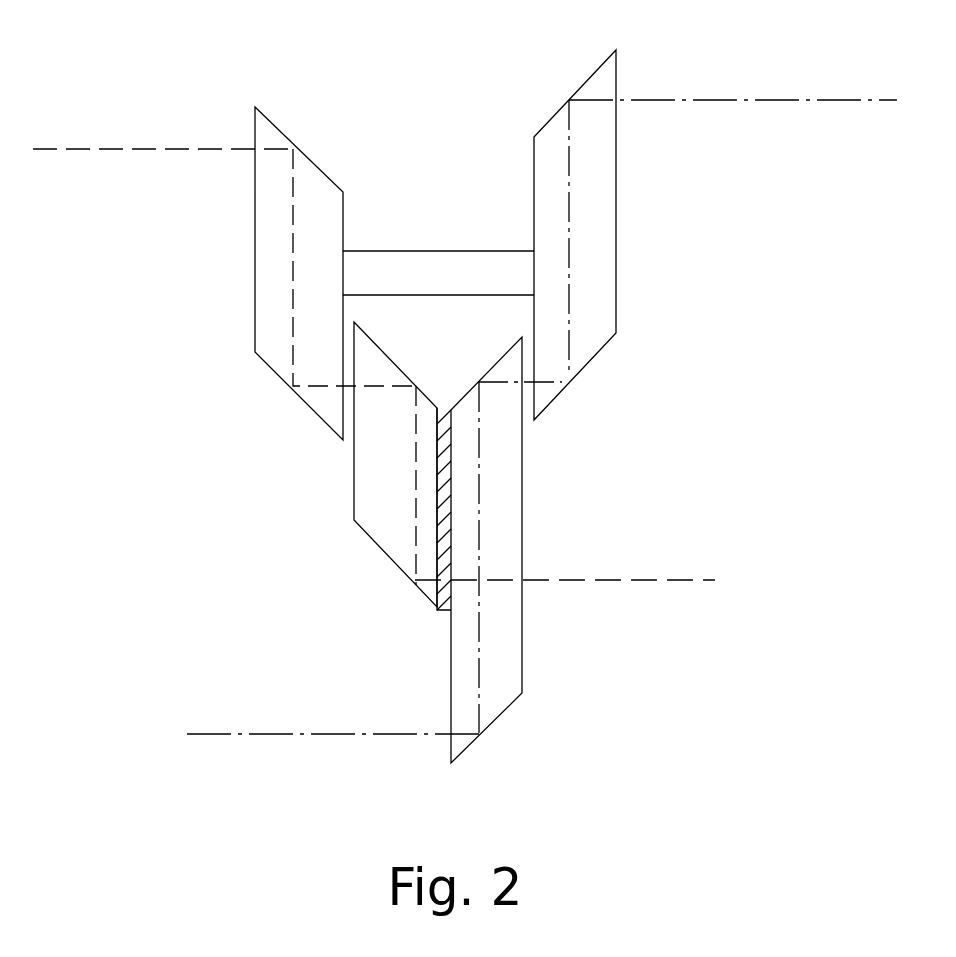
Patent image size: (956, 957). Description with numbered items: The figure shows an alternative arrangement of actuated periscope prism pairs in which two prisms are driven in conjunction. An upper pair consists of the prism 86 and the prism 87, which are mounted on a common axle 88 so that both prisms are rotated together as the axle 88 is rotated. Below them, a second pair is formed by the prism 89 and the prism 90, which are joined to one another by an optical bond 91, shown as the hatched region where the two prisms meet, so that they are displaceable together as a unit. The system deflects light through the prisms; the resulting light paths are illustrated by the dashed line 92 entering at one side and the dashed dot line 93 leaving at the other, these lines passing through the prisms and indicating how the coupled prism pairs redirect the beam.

The prism 86 is at (311, 158).
The prism 87 is at (556, 118).
The axle 88 is at (434, 250).
The prism 89 is at (502, 692).
The prism 90 is at (372, 489).
The optical bond 91 is at (447, 613).
The dashed line 92 is at (90, 148).
The dashed dot line 93 is at (780, 99).